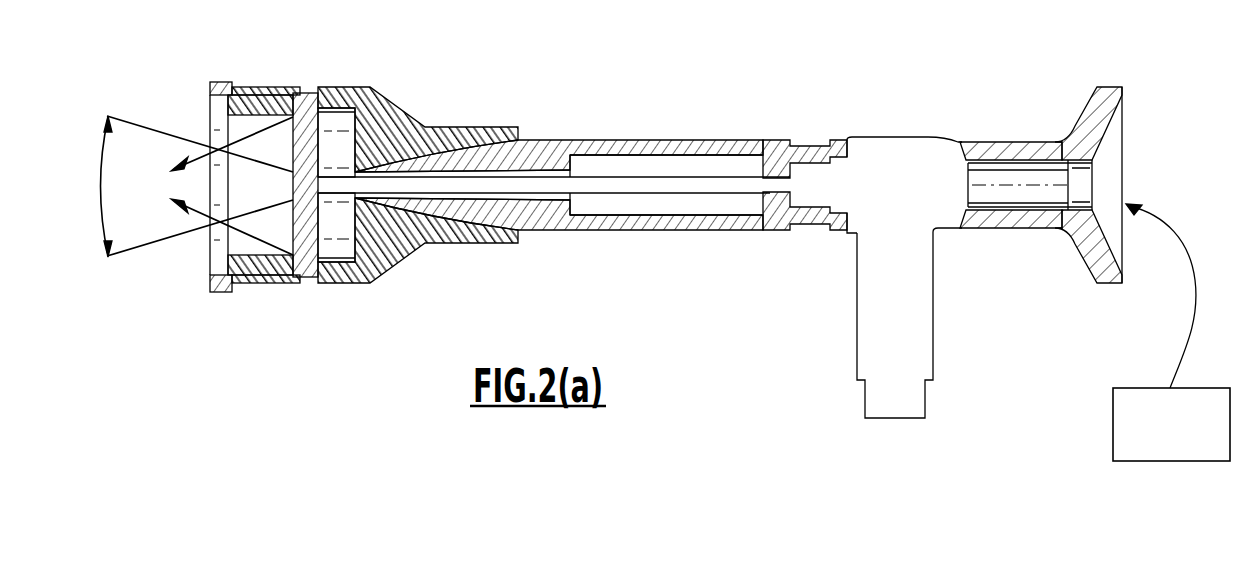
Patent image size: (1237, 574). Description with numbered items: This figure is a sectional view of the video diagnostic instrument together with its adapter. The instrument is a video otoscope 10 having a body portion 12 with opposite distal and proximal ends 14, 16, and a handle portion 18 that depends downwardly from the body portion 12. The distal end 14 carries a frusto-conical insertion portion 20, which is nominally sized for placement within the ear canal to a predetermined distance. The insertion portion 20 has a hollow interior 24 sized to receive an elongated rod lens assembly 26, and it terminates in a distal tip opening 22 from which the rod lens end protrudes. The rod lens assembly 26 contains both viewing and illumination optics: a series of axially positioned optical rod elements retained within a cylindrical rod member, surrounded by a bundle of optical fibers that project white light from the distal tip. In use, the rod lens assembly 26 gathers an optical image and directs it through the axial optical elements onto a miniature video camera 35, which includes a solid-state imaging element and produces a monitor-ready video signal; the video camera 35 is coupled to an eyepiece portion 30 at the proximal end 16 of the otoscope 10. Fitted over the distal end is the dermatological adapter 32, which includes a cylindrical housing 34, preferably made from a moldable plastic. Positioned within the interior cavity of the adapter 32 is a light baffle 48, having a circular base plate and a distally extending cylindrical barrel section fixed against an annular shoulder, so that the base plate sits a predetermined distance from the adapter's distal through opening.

The video otoscope 10 is at (588, 66).
The body portion 12 is at (872, 137).
The distal end 14 is at (423, 128).
The proximal end 16 is at (1122, 87).
The handle portion 18 is at (917, 332).
The insertion portion 20 is at (500, 232).
The distal tip opening 22 is at (357, 196).
The hollow interior 24 is at (558, 203).
The rod lens assembly 26 is at (690, 178).
The eyepiece portion 30 is at (1107, 280).
The dermatological adapter 32 is at (271, 87).
The cylindrical housing 34 is at (380, 262).
The video camera 35 is at (1113, 420).
The light baffle 48 is at (278, 276).